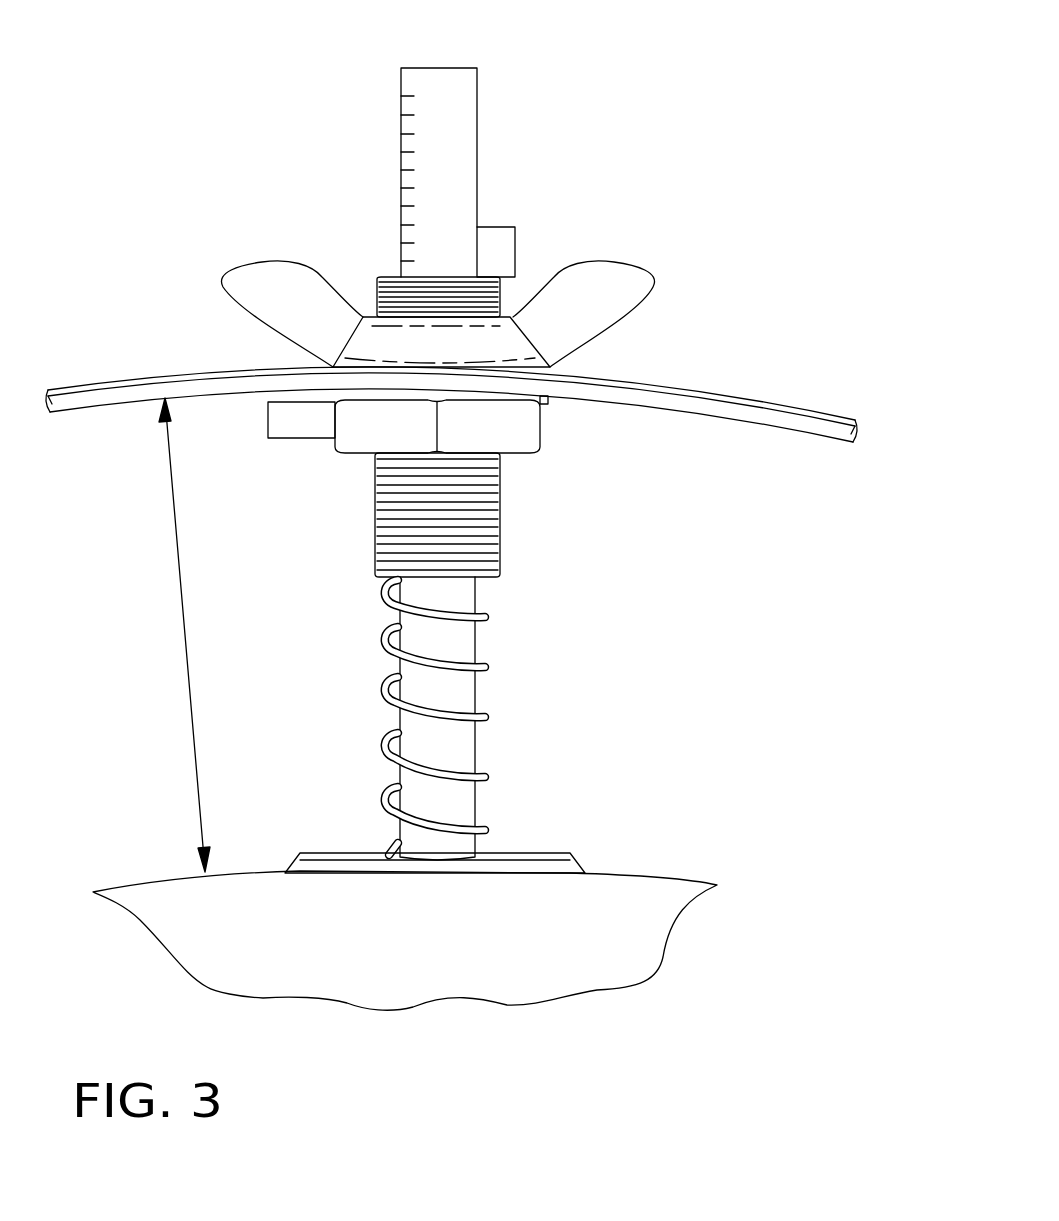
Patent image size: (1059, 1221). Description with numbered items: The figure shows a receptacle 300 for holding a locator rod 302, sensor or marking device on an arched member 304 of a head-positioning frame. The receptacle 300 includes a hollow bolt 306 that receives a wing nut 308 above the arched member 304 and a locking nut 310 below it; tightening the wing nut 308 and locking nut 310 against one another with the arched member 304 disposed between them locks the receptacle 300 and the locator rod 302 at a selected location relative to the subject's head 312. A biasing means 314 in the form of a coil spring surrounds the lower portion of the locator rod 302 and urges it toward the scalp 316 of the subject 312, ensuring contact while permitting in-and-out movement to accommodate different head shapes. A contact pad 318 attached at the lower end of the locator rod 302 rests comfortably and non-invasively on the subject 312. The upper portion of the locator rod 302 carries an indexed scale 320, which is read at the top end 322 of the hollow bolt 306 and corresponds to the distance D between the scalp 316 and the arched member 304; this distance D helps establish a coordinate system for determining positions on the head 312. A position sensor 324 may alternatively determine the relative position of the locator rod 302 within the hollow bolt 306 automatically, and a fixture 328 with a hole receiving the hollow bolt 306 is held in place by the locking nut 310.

The receptacle 300 is at (674, 45).
The locator rod 302 is at (480, 108).
The arched member 304 is at (723, 388).
The hollow bolt 306 is at (500, 517).
The wing nut 308 is at (637, 273).
The locking nut 310 is at (543, 438).
The subject's head 312 is at (462, 955).
The biasing means 314 is at (485, 663).
The scalp 316 is at (663, 880).
The contact pad 318 is at (522, 853).
The indexed scale 320 is at (388, 119).
The top end 322 is at (389, 275).
The position sensor 324 is at (515, 240).
The fixture 328 is at (268, 402).
The distance D is at (183, 618).